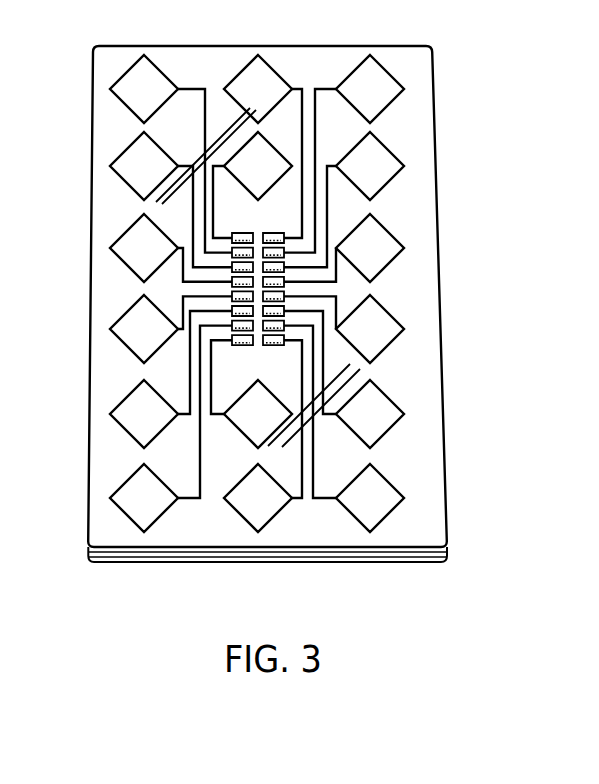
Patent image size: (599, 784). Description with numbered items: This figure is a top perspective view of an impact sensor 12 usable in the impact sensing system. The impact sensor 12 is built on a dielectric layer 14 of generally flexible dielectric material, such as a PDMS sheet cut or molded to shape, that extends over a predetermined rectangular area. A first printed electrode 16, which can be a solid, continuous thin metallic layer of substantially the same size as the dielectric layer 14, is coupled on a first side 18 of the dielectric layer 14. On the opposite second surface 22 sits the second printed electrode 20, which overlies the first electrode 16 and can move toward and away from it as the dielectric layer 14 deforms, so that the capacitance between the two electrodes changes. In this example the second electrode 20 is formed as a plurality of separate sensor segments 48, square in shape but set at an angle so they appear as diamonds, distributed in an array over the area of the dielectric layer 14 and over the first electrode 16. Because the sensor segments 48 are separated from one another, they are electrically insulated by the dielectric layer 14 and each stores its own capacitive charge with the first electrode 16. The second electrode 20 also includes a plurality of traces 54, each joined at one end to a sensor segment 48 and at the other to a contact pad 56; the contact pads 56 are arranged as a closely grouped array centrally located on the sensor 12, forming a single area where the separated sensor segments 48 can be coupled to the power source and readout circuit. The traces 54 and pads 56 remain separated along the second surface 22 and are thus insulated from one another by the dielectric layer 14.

The impact sensor 12 is at (474, 79).
The dielectric layer 14 is at (357, 553).
The first printed electrode 16 is at (227, 560).
The first side 18 is at (130, 558).
The second printed electrode 20 is at (410, 278).
The second surface 22 is at (422, 372).
The sensor segments 48 is at (382, 509).
The traces 54 is at (213, 209).
The contact pads 56 is at (242, 232).